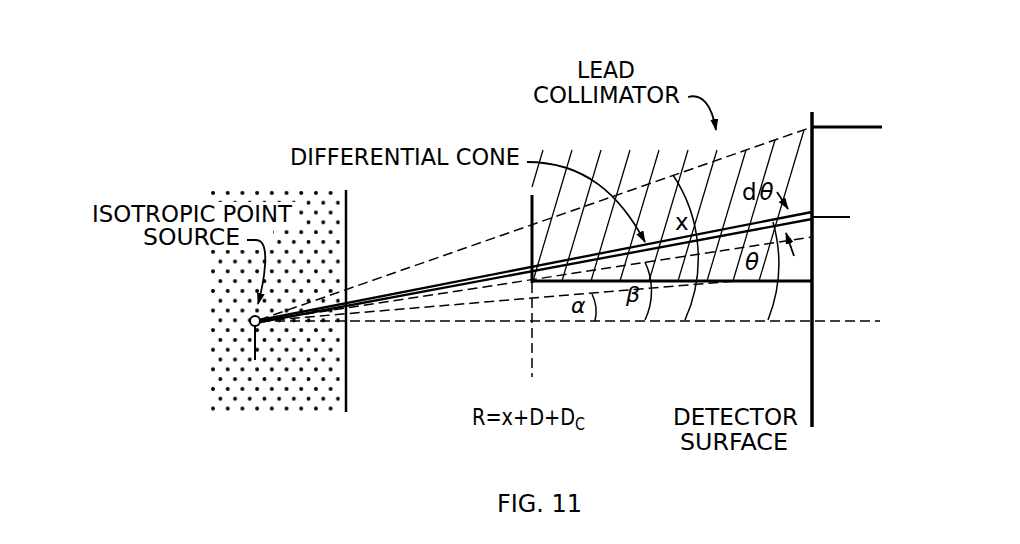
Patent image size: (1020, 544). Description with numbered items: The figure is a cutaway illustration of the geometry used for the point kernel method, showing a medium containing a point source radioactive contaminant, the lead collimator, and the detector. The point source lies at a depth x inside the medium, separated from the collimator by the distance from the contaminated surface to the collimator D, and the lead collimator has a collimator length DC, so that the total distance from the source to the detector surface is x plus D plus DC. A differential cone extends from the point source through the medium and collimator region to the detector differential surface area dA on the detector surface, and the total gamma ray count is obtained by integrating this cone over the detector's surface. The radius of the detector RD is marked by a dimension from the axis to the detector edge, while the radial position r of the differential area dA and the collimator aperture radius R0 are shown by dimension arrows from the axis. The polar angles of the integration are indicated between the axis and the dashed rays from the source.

The source depth x is at (346, 346).
The distance from contaminated surface to collimator D is at (346, 346).
The collimator length DC is at (812, 346).
The detector differential surface area dA is at (822, 213).
The radius of the detector RD is at (875, 321).
The radial distance of dA from axis r is at (846, 217).
The collimator aperture radius R0 is at (735, 282).